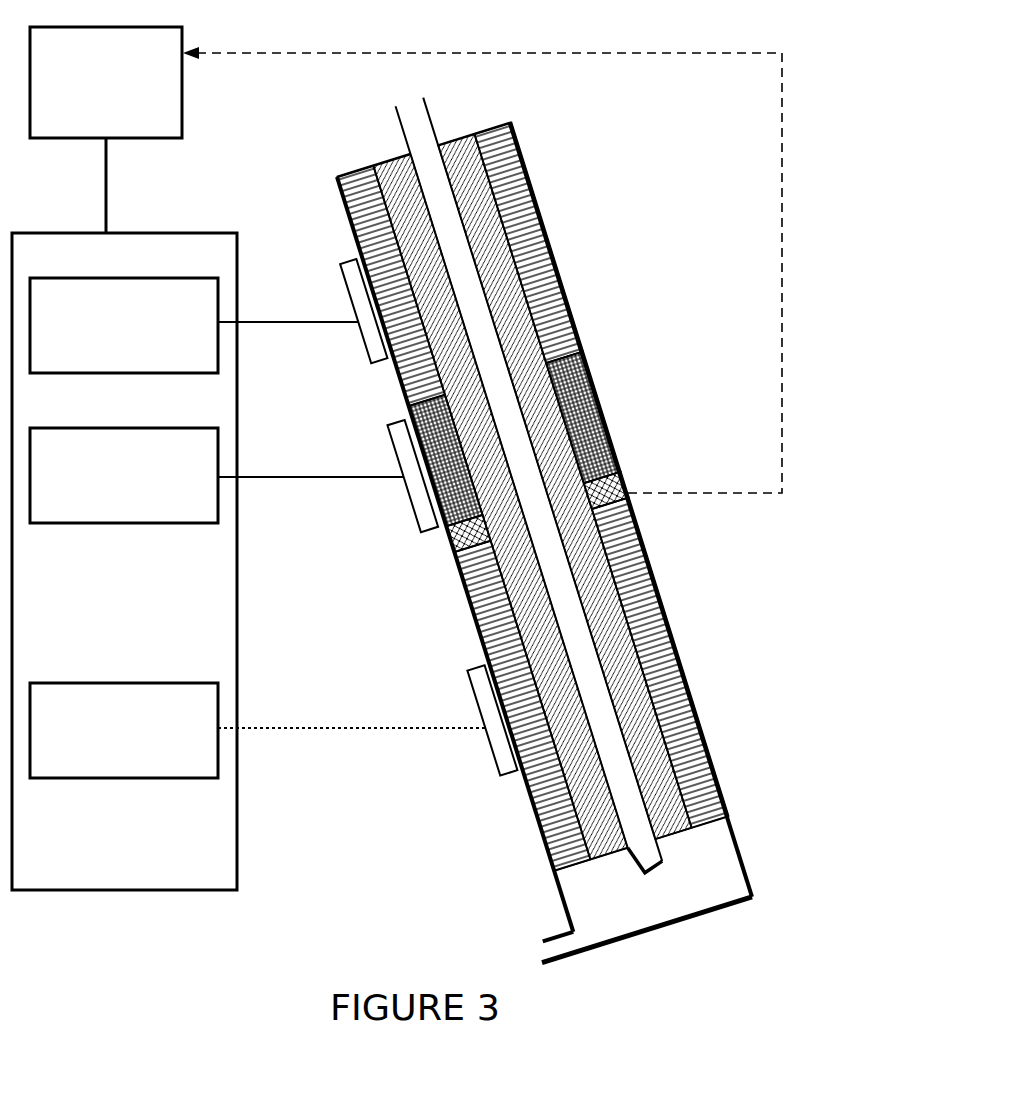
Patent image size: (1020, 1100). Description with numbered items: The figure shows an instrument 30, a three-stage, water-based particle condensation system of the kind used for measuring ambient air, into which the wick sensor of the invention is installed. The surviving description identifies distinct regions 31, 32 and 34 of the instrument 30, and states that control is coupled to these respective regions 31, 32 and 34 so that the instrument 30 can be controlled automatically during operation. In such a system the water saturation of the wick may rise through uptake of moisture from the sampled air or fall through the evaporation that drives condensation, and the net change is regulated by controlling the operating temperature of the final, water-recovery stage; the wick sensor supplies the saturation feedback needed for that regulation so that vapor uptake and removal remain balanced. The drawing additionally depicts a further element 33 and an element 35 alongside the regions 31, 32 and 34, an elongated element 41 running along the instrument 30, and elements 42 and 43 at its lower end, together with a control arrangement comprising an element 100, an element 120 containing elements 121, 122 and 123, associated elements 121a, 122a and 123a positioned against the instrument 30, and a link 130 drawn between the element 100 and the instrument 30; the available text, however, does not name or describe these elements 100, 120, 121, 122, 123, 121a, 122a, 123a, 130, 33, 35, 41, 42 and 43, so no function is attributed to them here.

The processor 100 is at (106, 82).
The controller unit 120 is at (124, 514).
The first controller 121 is at (194, 325).
The second controller 122 is at (217, 475).
The third controller 123 is at (257, 730).
The first temperature sensor 121a is at (343, 270).
The second temperature sensor 122a is at (390, 432).
The third temperature sensor 123a is at (477, 698).
The communication link 130 is at (784, 316).
The instrument 30 is at (837, 116).
The region 31 is at (527, 228).
The region 32 is at (597, 402).
The insulating segment 33 is at (626, 487).
The region 34 is at (655, 605).
The sleeve 35 is at (657, 788).
The inner tube 41 is at (432, 115).
The base plate 42 is at (735, 888).
The flange 43 is at (541, 942).